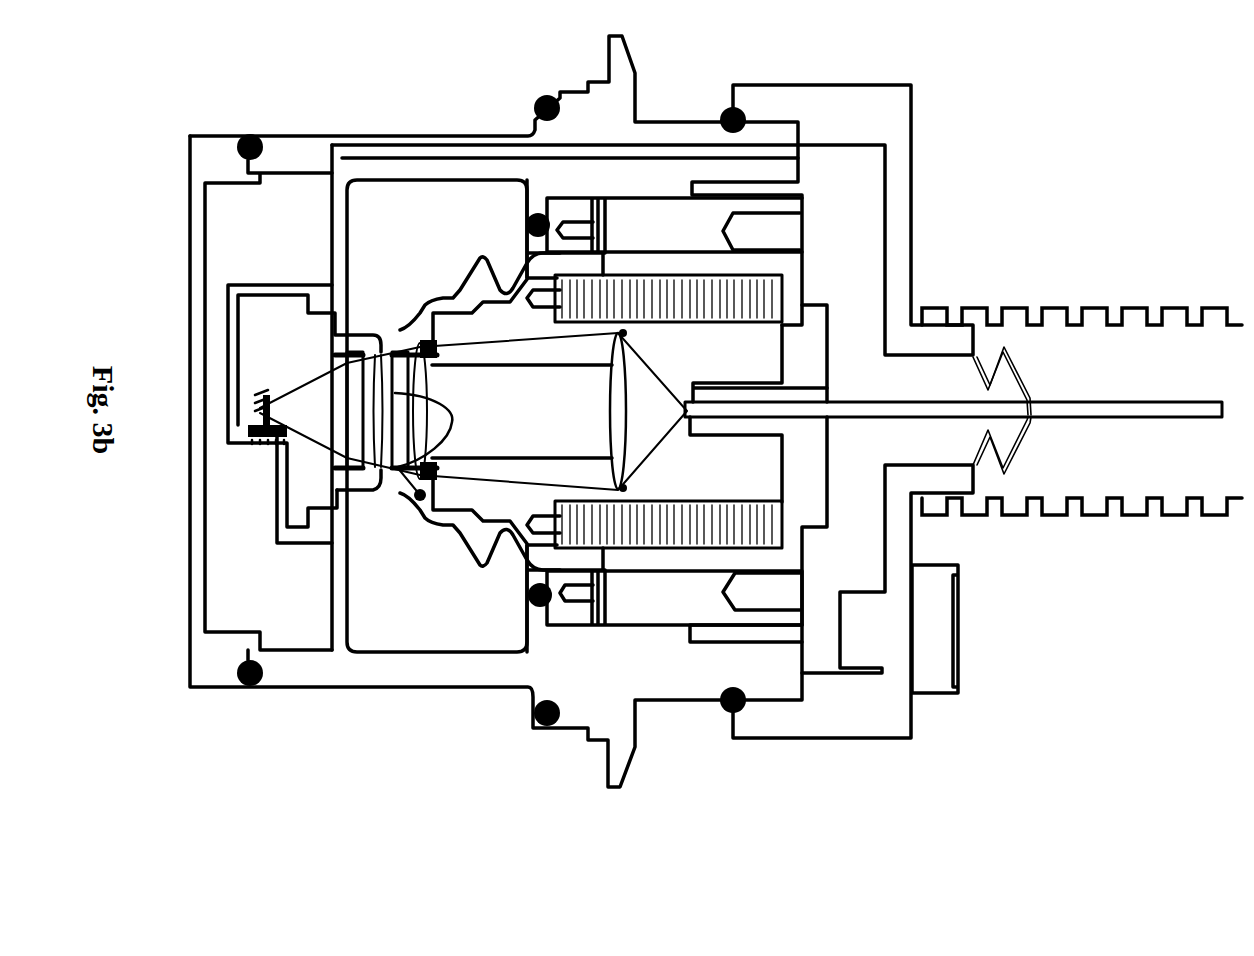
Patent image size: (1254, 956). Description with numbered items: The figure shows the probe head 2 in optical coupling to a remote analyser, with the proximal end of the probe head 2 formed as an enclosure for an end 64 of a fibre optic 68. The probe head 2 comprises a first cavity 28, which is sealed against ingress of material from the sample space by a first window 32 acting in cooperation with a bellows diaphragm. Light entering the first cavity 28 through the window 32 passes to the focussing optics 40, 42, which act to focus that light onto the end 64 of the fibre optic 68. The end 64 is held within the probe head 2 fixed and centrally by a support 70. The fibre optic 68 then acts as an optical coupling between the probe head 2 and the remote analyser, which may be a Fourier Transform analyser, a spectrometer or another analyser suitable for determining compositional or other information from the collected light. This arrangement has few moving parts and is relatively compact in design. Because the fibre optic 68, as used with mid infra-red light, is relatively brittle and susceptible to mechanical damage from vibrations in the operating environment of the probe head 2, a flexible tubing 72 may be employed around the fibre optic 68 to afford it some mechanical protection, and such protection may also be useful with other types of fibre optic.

The probe head 2 is at (432, 798).
The first cavity 28 is at (703, 480).
The first window 32 is at (410, 470).
The focussing optics 40 is at (430, 373).
The focussing optics 42 is at (605, 413).
The end of fibre optic 64 is at (693, 390).
The fibre optic 68 is at (1148, 418).
The support 70 is at (828, 357).
The flexible tubing 72 is at (1103, 308).